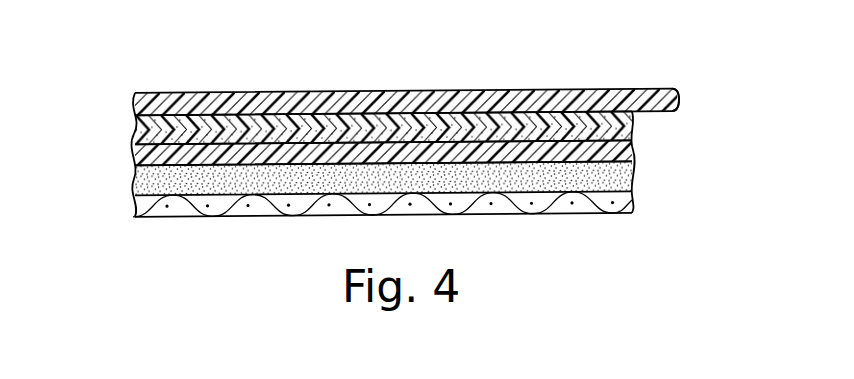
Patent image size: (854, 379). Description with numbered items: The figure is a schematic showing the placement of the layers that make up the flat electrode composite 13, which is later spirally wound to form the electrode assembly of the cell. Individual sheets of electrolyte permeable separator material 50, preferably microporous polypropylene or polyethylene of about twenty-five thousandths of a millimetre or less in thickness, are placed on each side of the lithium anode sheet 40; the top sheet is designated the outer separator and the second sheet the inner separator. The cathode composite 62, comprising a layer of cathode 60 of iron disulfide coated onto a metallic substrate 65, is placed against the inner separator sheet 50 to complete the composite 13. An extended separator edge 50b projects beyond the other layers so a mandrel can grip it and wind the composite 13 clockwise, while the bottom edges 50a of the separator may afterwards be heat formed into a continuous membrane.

The flat electrode composite 13 is at (196, 62).
The separator sheet 50 is at (405, 114).
The bottom edges of separator 50a is at (138, 152).
The extended separator edge 50b is at (680, 101).
The anode 40 is at (634, 124).
The cathode composite 62 is at (402, 227).
The cathode 60 is at (634, 185).
The metallic substrate 65 is at (553, 210).